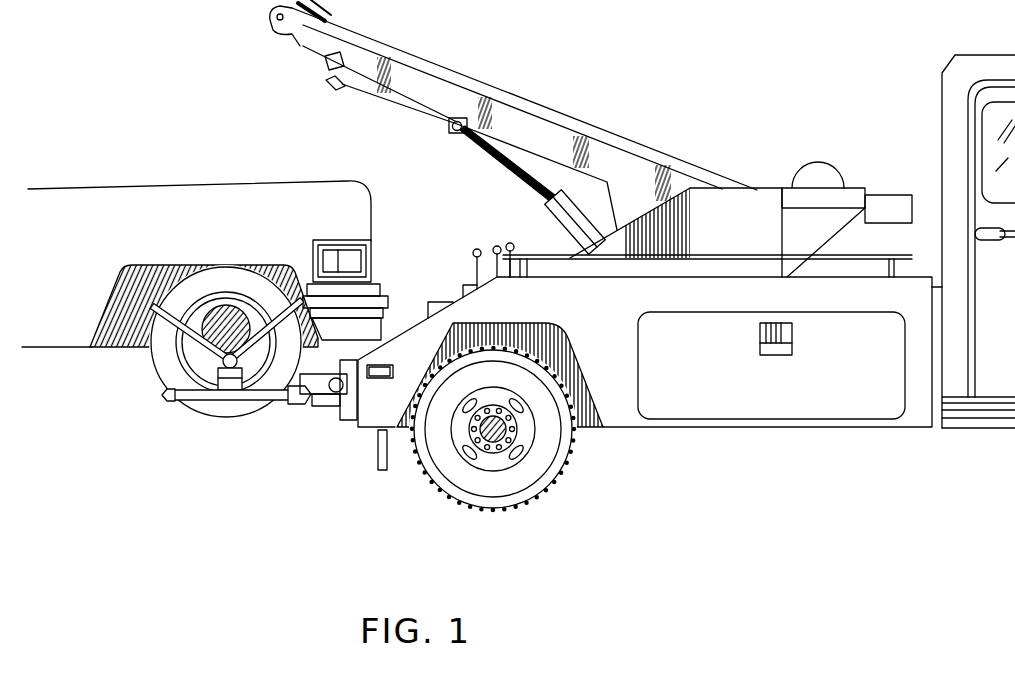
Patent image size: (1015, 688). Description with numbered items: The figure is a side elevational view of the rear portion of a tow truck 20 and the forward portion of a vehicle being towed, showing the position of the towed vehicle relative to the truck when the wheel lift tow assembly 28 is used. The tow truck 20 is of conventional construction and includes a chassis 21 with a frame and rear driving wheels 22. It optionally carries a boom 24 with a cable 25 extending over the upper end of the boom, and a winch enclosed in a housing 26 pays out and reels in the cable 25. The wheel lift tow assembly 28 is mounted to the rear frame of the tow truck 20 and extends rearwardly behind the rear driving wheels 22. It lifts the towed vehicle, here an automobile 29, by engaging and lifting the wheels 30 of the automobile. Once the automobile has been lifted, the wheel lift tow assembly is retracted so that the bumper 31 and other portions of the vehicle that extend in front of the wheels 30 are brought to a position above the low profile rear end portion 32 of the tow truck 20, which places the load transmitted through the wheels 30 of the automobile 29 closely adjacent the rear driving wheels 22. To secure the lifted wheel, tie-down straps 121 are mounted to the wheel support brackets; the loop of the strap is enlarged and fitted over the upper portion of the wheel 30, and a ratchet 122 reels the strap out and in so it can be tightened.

The tow truck 20 is at (784, 114).
The chassis 21 is at (590, 430).
The rear driving wheels 22 is at (543, 488).
The boom 24 is at (520, 116).
The cable 25 is at (385, 107).
The housing 26 is at (730, 188).
The wheel lift tow assembly 28 is at (185, 422).
The automobile 29 is at (186, 184).
The wheels 30 is at (160, 375).
The bumper 31 is at (390, 305).
The low profile rear end portion 32 is at (458, 312).
The tie-down straps 121 is at (150, 343).
The ratchet 122 is at (232, 382).